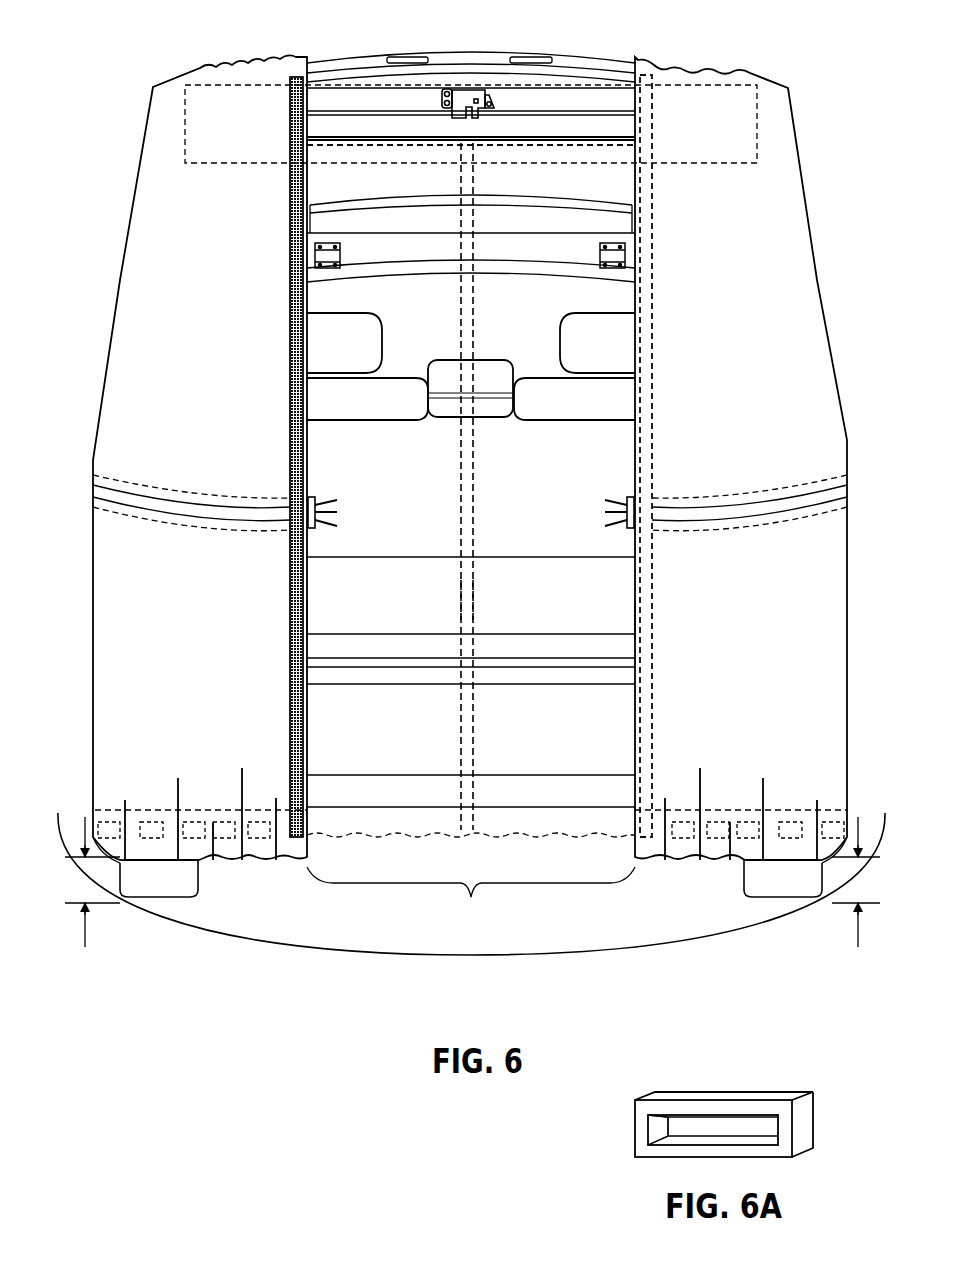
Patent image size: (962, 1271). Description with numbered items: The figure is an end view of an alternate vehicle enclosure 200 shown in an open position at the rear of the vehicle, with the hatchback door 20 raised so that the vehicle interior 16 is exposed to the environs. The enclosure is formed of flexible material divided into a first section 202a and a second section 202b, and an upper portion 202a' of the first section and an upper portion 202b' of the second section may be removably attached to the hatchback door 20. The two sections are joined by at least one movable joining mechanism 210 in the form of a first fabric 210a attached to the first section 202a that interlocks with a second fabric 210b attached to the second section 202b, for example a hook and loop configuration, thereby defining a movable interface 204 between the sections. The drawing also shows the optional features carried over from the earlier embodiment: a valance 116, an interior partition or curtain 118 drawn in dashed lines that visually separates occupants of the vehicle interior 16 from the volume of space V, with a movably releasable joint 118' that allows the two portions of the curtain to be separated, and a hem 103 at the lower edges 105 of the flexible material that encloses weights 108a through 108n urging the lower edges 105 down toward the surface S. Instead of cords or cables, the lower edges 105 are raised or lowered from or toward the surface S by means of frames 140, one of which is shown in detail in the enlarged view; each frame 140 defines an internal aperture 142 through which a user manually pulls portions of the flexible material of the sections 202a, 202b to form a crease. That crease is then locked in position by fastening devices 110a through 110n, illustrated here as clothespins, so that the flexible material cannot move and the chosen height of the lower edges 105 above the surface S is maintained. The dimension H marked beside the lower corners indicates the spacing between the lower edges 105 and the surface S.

In FIG. 6, the hatchback door 20 is at (469, 55).
In FIG. 6, the vehicle interior 16 is at (555, 148).
In FIG. 6, the volume of space V is at (372, 148).
In FIG. 6, the vehicle enclosure 200 is at (120, 196).
In FIG. 6, the first section 202a is at (708, 451).
In FIG. 6, the second section 202b is at (469, 480).
In FIG. 6, the upper portion of the first section 202a' is at (797, 65).
In FIG. 6, the upper portion of the second section 202b' is at (149, 62).
In FIG. 6, the valance 116 is at (185, 125).
In FIG. 6, the movable joining mechanism 210 is at (290, 262).
In FIG. 6, the first fabric 210a is at (645, 262).
In FIG. 6, the second fabric 210b is at (251, 457).
In FIG. 6, the rectangular frame 140 is at (305, 497).
In FIG. 6A, the rectangular frame 140 is at (795, 1092).
In FIG. 6A, the internal aperture 142 is at (650, 1132).
In FIG. 6, the fastening device 110a is at (471, 488).
In FIG. 6, the fastening device 110n is at (363, 475).
In FIG. 6, the interior partition or curtain 118 is at (471, 620).
In FIG. 6, the movably releasable joint 118' is at (508, 600).
In FIG. 6, the weight 108a is at (471, 792).
In FIG. 6, the weight 108n is at (277, 770).
In FIG. 6, the hem 103 is at (120, 815).
In FIG. 6, the lower edges 105 is at (230, 860).
In FIG. 6, the movable interface 204 is at (471, 901).
In FIG. 6, the height H is at (472, 882).
In FIG. 6, the surface S is at (694, 932).